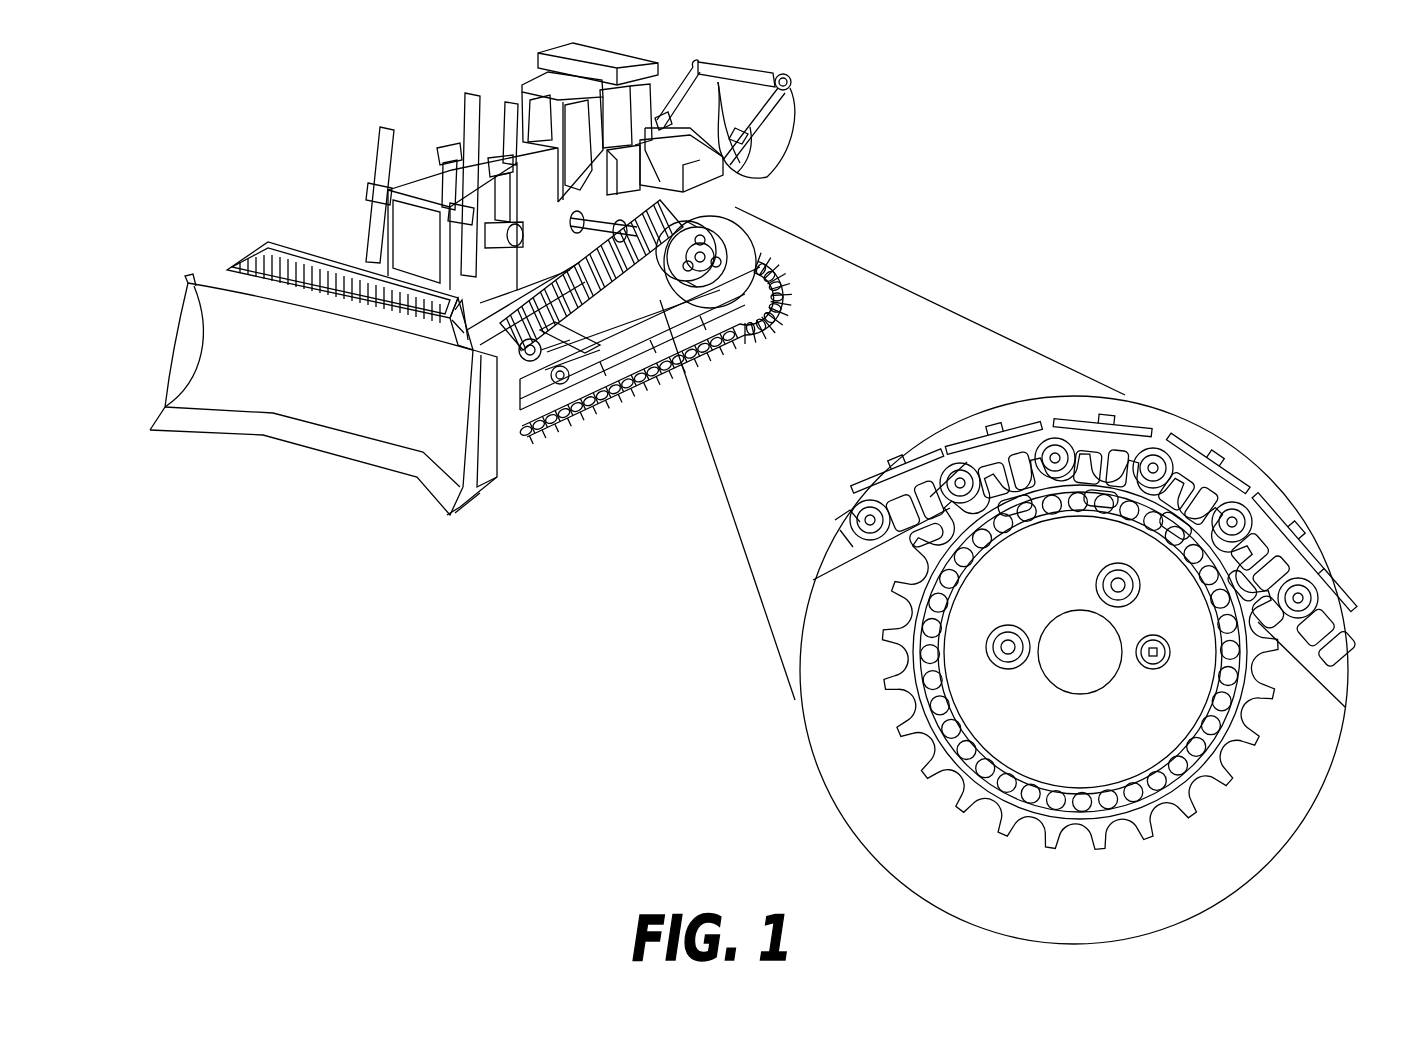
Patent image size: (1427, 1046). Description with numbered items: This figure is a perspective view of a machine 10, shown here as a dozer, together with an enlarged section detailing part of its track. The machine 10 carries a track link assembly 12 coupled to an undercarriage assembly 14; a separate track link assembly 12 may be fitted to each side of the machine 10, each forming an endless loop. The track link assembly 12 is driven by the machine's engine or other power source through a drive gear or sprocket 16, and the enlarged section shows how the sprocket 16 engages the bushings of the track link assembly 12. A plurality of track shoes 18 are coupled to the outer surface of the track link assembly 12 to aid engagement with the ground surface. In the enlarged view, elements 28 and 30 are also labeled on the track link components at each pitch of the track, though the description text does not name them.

The machine (track-type tractor) 10 is at (233, 134).
The track assembly 12 is at (790, 265).
The undercarriage 14 is at (797, 290).
The sprocket 16 is at (725, 235).
The track shoe / link 18 is at (885, 470).
The bushing / pin 28 is at (868, 518).
The roller 30 is at (852, 522).